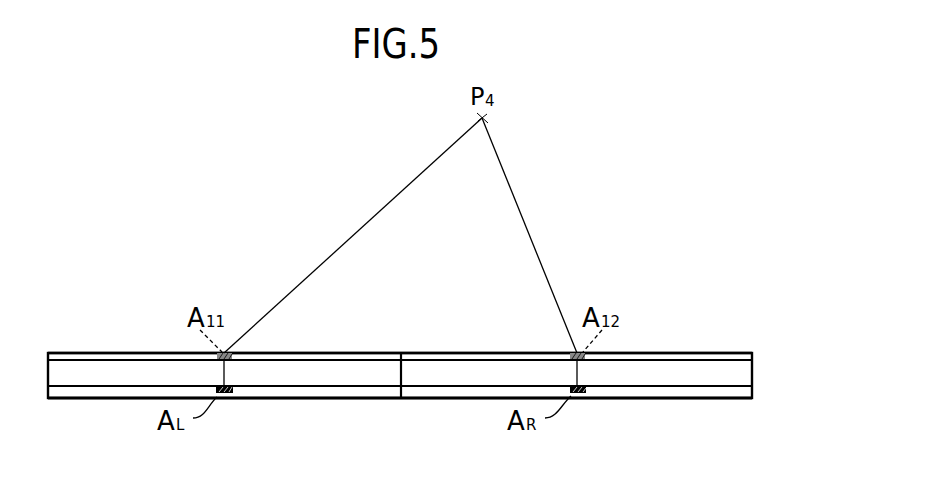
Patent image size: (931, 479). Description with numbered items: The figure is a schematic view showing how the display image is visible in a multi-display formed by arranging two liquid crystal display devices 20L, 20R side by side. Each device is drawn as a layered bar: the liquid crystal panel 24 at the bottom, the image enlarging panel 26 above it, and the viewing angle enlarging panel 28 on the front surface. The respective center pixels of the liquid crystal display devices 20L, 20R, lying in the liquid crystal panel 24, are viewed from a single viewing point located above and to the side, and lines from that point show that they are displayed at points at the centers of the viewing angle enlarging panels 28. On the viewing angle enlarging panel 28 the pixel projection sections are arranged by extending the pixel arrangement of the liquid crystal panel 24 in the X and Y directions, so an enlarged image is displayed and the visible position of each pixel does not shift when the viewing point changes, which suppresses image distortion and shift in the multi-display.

The liquid crystal display device 20L is at (127, 327).
The liquid crystal display device 20R is at (693, 327).
The liquid crystal panel 24 is at (752, 390).
The image enlarging panel 26 is at (748, 374).
The viewing angle enlarging panel 28 is at (752, 356).